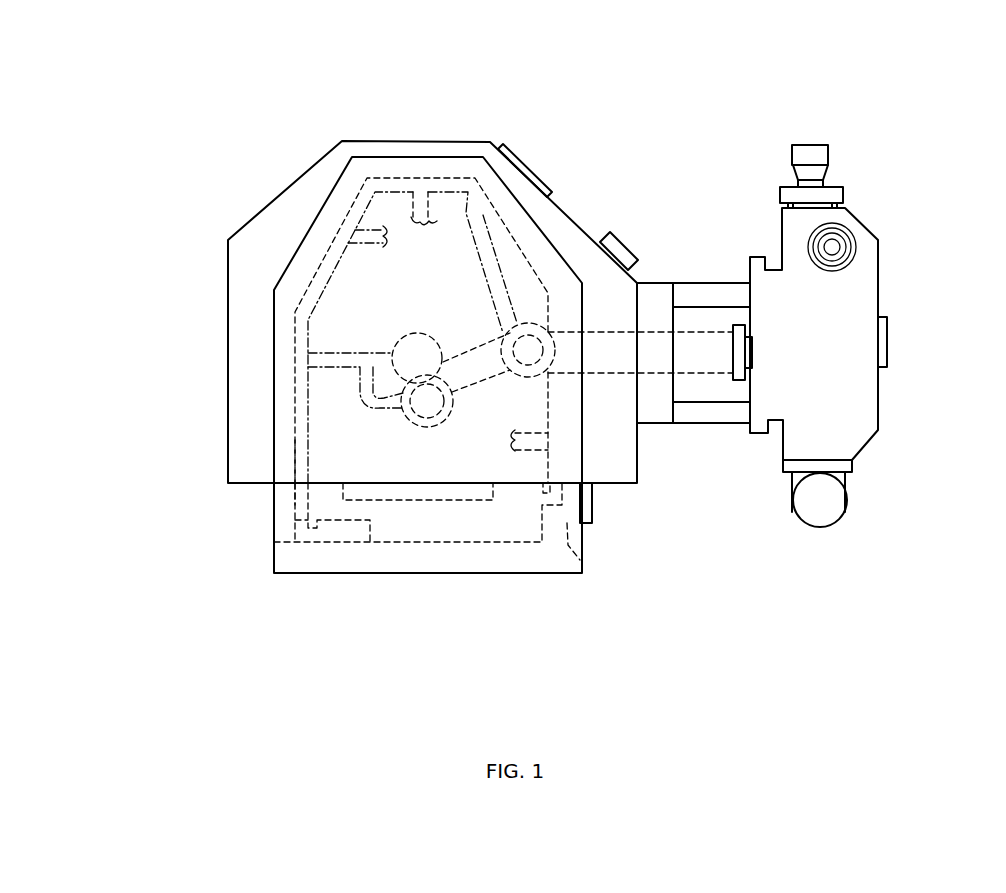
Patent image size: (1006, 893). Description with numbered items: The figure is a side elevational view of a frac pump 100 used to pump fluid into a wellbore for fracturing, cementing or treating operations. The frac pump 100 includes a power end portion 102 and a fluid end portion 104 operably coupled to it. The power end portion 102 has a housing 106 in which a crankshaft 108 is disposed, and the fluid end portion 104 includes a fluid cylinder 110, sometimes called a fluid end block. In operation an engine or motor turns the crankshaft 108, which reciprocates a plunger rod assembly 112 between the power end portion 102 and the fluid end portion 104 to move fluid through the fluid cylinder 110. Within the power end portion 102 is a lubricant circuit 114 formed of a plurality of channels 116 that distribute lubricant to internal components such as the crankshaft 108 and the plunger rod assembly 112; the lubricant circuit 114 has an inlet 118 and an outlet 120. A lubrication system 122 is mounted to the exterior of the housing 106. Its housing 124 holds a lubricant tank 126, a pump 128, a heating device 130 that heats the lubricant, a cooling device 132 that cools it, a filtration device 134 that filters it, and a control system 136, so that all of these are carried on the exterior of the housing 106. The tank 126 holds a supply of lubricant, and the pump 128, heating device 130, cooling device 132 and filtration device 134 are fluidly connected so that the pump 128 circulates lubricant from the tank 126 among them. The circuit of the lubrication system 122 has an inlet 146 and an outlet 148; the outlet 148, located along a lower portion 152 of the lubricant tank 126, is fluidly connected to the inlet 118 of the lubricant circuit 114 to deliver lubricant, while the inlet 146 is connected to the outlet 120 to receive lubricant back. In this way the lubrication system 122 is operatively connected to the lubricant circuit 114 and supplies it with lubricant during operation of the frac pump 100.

The frac pump 100 is at (186, 82).
The power end portion 102 is at (216, 340).
The fluid end portion 104 is at (897, 397).
The housing 106 is at (320, 158).
The crankshaft 108 is at (417, 340).
The fluid cylinder 110 is at (782, 227).
The plunger rod assembly 112 is at (518, 321).
The lubricant circuit 114 is at (400, 188).
The channels 116 is at (323, 252).
The inlet 118 is at (293, 466).
The outlet 120 is at (556, 470).
The lubrication system 122 is at (270, 555).
The housing 124 is at (583, 547).
The lubricant tank 126 is at (465, 550).
The pump 128 is at (383, 533).
The heating device 130 is at (396, 502).
The cooling device 132 is at (287, 520).
The filtration device 134 is at (567, 525).
The control system 136 is at (586, 525).
The inlet 146 is at (557, 518).
The outlet 148 is at (293, 497).
The lower portion 152 is at (822, 528).